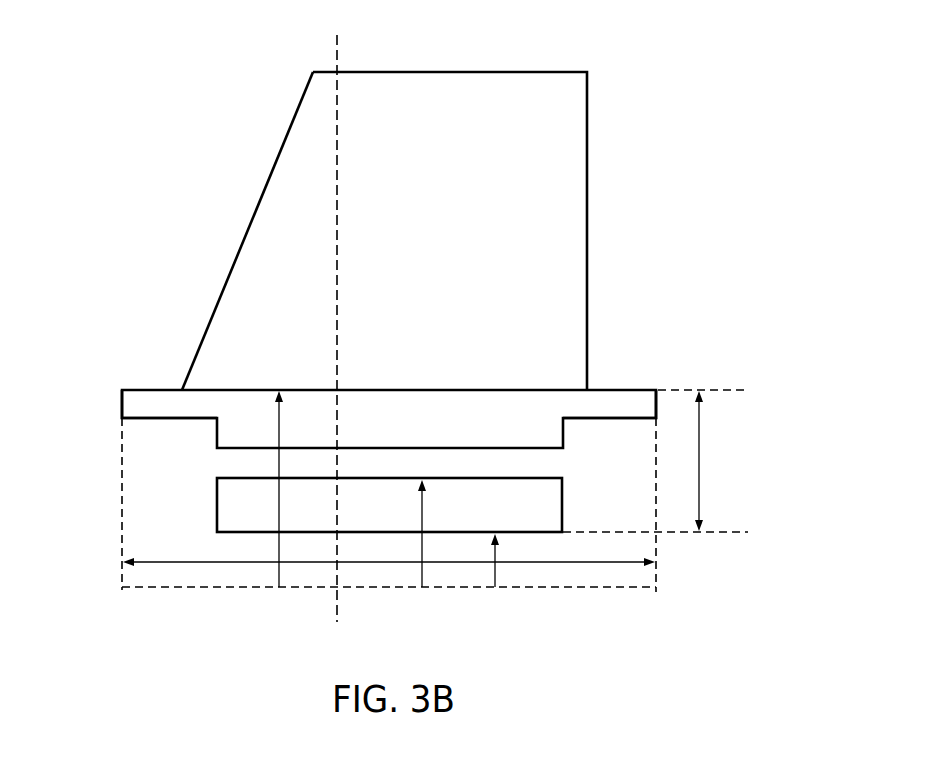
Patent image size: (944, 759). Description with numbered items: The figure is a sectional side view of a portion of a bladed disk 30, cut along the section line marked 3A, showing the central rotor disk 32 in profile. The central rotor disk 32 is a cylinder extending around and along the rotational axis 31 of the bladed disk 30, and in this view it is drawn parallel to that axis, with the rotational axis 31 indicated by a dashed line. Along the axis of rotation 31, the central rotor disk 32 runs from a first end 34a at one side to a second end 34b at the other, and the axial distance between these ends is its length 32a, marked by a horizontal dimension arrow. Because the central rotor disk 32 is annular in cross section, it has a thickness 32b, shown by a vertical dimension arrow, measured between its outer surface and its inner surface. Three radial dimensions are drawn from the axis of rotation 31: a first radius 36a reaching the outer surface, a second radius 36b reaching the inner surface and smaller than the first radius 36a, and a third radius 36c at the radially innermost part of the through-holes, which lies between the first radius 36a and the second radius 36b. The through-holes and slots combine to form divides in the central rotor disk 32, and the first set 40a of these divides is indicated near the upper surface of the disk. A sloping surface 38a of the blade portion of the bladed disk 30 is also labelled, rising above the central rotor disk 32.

The bladed disk 30 is at (188, 84).
The inclined side surface 38a is at (295, 208).
The first set of divides 40a is at (208, 405).
The first end 34a is at (98, 444).
The second end 34b is at (666, 438).
The central rotor disk 32 is at (228, 503).
The length 32a is at (188, 563).
The thickness 32b is at (700, 458).
The rotational axis 31 is at (655, 590).
The first radius 36a is at (279, 510).
The second radius 36b is at (495, 573).
The third radius 36c is at (422, 517).
The section line 3A is at (337, 35).